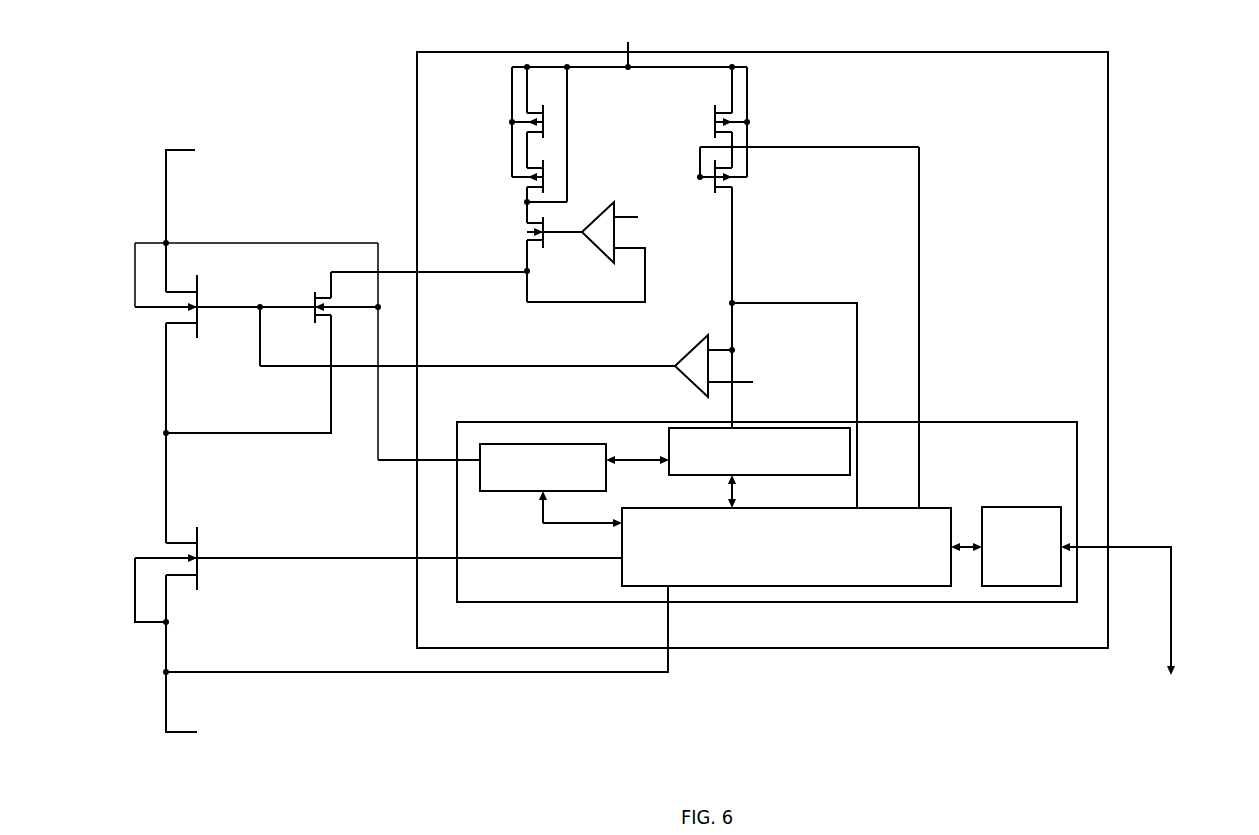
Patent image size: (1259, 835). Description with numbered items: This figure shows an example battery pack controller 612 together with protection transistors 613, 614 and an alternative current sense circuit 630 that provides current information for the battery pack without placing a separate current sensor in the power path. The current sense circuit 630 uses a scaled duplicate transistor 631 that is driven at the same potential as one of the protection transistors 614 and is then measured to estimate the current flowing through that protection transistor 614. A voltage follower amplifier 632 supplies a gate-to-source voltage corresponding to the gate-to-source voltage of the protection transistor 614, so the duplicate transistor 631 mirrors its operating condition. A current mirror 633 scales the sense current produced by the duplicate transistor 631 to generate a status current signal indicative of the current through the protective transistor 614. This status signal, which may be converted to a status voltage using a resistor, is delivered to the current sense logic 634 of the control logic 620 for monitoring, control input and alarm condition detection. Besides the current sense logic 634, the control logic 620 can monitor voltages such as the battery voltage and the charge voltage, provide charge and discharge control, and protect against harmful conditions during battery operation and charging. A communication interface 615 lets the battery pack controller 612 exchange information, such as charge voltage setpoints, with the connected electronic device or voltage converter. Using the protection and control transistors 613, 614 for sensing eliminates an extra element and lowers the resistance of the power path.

The battery pack controller 612 is at (1013, 52).
The protection transistor 613 is at (96, 555).
The protection transistor 614 is at (112, 317).
The communication interface 615 is at (1022, 507).
The control logic 620 is at (950, 422).
The current sense circuit 630 is at (690, 247).
The scaled duplicate transistor 631 is at (313, 293).
The voltage follower amplifier 632 is at (595, 248).
The current mirror 633 is at (495, 146).
The current sense logic 634 is at (762, 476).